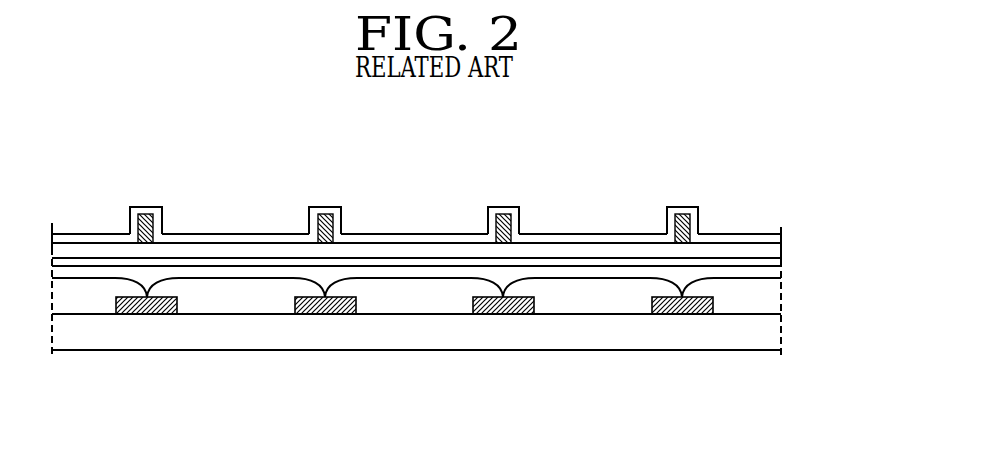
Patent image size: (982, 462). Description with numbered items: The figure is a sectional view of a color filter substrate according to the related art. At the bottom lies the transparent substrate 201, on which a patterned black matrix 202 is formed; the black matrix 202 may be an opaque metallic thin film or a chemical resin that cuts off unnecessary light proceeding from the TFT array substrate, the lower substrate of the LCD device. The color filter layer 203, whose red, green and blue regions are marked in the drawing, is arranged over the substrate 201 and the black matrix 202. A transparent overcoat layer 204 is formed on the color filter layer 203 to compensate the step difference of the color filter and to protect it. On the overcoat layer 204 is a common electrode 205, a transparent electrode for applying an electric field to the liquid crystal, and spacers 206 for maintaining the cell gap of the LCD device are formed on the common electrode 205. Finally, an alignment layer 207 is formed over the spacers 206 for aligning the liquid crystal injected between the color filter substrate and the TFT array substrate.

The substrate 201 is at (773, 336).
The black matrix 202 is at (690, 314).
The color filter layer 203 is at (773, 300).
The overcoat layer 204 is at (773, 272).
The common electrode 205 is at (773, 248).
The spacers 206 is at (681, 218).
The alignment layer 207 is at (741, 240).